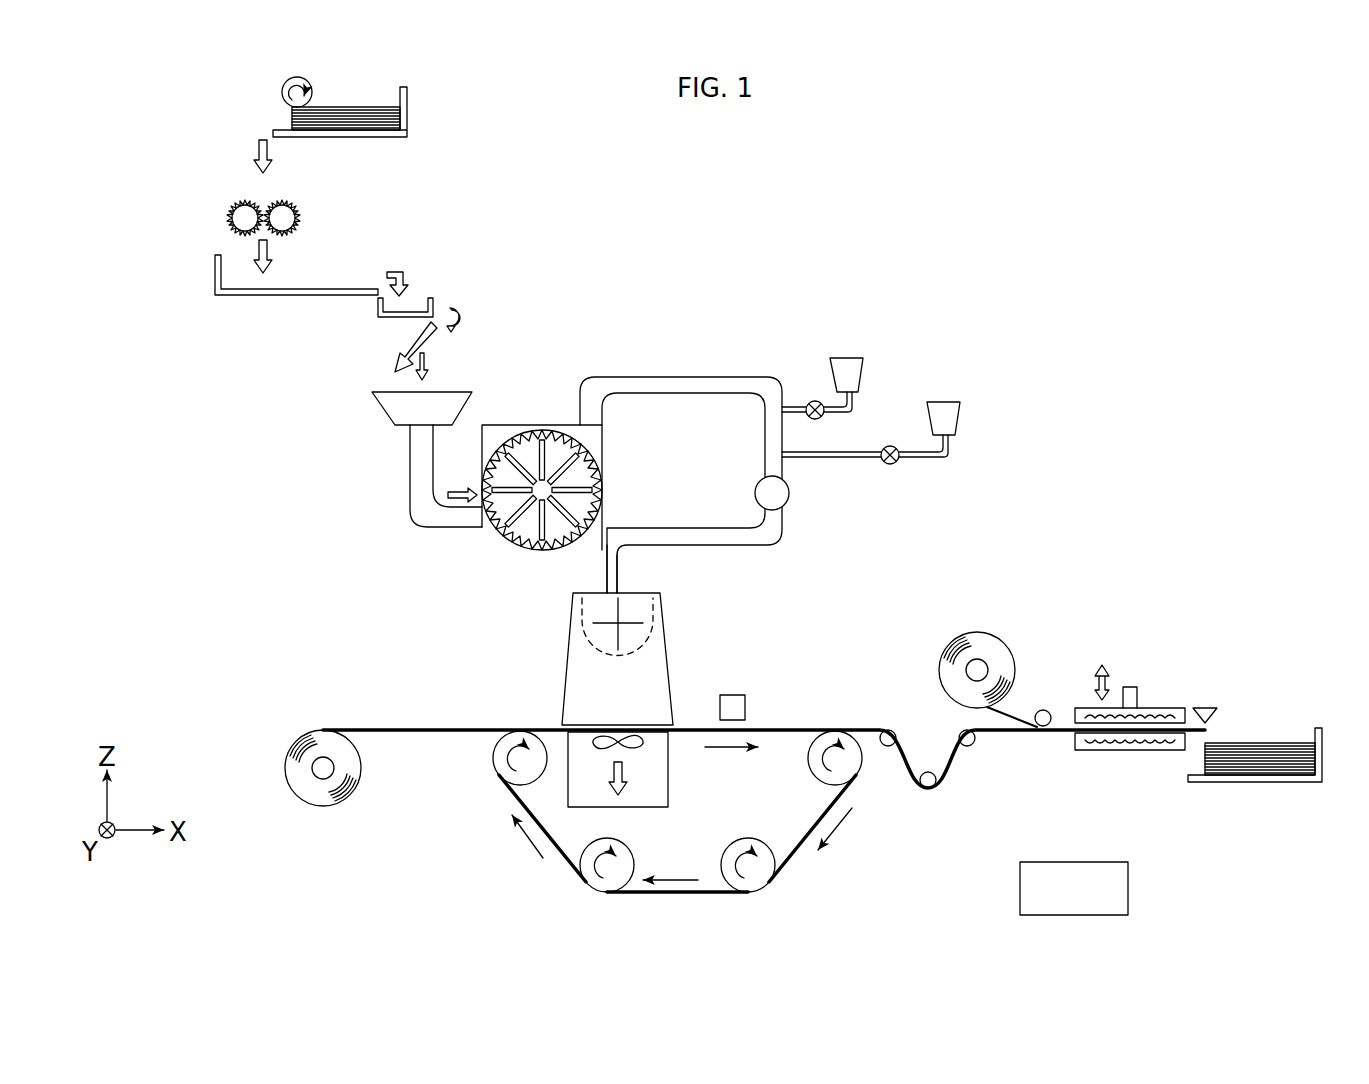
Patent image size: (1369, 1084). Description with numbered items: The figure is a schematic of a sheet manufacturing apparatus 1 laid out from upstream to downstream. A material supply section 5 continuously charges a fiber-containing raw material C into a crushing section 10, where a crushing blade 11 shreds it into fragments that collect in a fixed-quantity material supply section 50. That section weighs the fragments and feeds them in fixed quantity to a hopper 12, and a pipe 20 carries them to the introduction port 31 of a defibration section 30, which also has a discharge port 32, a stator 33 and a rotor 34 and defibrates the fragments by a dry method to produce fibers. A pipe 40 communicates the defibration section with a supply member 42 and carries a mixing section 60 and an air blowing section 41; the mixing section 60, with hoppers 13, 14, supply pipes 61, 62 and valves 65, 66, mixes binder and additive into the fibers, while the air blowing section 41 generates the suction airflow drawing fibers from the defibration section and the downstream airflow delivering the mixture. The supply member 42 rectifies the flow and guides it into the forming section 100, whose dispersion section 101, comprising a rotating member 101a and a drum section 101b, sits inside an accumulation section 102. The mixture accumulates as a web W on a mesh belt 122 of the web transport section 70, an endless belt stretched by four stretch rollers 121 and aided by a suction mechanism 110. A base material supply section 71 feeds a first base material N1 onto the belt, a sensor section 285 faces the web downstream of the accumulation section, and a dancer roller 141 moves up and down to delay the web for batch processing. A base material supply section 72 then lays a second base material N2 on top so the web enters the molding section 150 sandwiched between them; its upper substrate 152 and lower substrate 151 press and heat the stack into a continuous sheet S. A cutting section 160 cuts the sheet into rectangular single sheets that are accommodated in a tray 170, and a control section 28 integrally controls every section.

The sheet manufacturing apparatus 1 is at (668, 218).
The material supply section 5 is at (407, 110).
The raw material C is at (313, 103).
The crushing section 10 is at (213, 189).
The crushing blade 11 is at (282, 204).
The fixed-quantity material supply section 50 is at (437, 270).
The hopper 12 is at (388, 413).
The pipe 20 is at (410, 477).
The defibration section 30 is at (550, 465).
The introduction port 31 is at (492, 522).
The discharge port 32 is at (597, 415).
The stator 33 is at (602, 482).
The rotor 34 is at (575, 507).
The pipe 40 is at (685, 449).
The air blowing section 41 is at (790, 490).
The supply member 42 is at (607, 562).
The mixing section 60 is at (914, 411).
The supply pipe 61 is at (853, 413).
The supply pipe 62 is at (950, 453).
The valve 65 is at (818, 401).
The valve 66 is at (892, 464).
The hopper 13 is at (842, 355).
The hopper 14 is at (940, 400).
The forming section 100 is at (449, 651).
The dispersion section 101 is at (505, 659).
The rotating member 101a is at (592, 612).
The drum section 101b is at (582, 652).
The accumulation section 102 is at (570, 688).
The suction mechanism 110 is at (668, 797).
The web transport section 70 is at (726, 769).
The base material supply section 71 is at (300, 795).
The base material supply section 72 is at (1003, 640).
The stretch rollers 121 is at (497, 757).
The mesh belt 122 is at (685, 895).
The first base material N1 is at (372, 729).
The second base material N2 is at (1035, 716).
The web W is at (695, 727).
The sensor section 285 is at (727, 694).
The dancer roller 141 is at (947, 766).
The molding section 150 is at (1130, 700).
The lower substrate 151 is at (1160, 751).
The upper substrate 152 is at (1152, 707).
The cutting section 160 is at (1205, 706).
The sheet S is at (1255, 741).
The tray 170 is at (1255, 766).
The control section 28 is at (1128, 888).